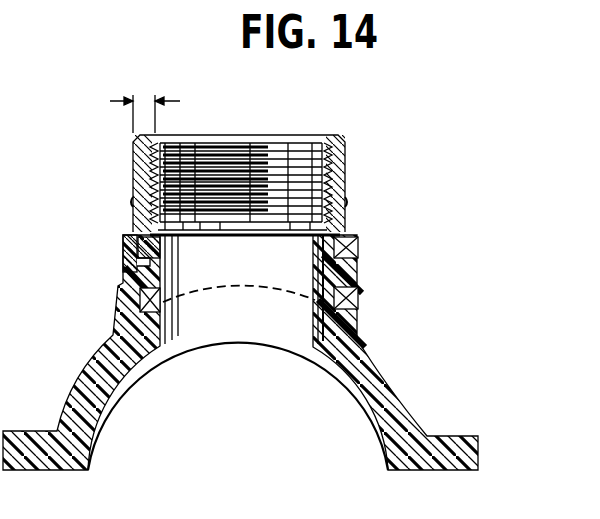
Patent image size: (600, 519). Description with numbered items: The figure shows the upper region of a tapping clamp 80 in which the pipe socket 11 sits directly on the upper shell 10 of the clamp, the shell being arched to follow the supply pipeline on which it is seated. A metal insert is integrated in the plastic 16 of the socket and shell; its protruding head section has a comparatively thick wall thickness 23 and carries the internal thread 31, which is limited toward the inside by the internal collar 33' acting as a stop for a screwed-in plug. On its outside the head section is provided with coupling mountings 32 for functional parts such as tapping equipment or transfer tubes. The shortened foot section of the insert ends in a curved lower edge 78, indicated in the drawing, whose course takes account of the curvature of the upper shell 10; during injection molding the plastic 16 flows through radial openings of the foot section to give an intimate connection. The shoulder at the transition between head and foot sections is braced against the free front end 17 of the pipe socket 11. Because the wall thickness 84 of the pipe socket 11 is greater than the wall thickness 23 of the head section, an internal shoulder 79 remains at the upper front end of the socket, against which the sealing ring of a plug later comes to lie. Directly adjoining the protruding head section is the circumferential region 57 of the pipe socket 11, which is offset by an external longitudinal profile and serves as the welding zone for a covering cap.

The upper shell 10 is at (386, 350).
The pipe socket 11 is at (117, 235).
The plastic 16 is at (360, 296).
The free front end 17 is at (130, 237).
The wall thickness 23 is at (148, 106).
The internal thread 31 is at (197, 137).
The internal collar 33' is at (311, 142).
The circumferential region 57 is at (371, 267).
The curved lower edge 78 is at (283, 291).
The internal shoulder 79 is at (358, 233).
The tapping clamp 80 is at (268, 149).
The wall thickness 84 is at (137, 262).
The coupling mountings 32 is at (132, 200).